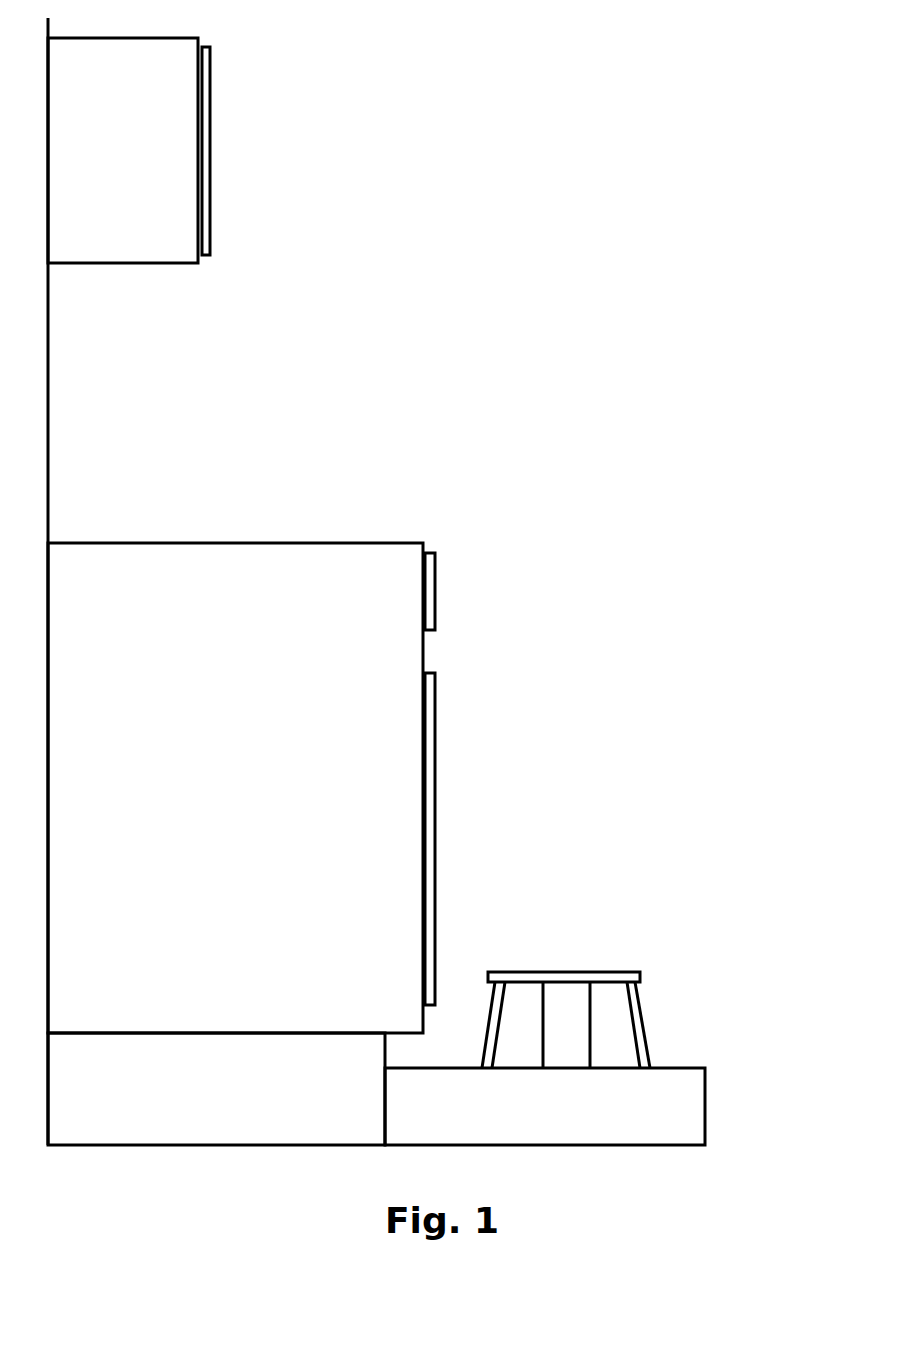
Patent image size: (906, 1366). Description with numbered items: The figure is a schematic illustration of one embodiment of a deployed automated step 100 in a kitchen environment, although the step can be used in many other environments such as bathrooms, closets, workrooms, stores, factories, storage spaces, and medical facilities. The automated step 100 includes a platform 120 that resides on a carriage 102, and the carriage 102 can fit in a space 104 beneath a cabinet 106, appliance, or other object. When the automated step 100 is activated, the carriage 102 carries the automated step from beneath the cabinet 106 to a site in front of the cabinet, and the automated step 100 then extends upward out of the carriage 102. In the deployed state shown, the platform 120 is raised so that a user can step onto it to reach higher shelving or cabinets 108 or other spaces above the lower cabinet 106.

The automated step 100 is at (412, 581).
The carriage 102 is at (707, 1100).
The space 104 is at (216, 1089).
The cabinet 106 is at (435, 597).
The higher shelving or cabinets 108 is at (210, 92).
The platform 120 is at (642, 980).